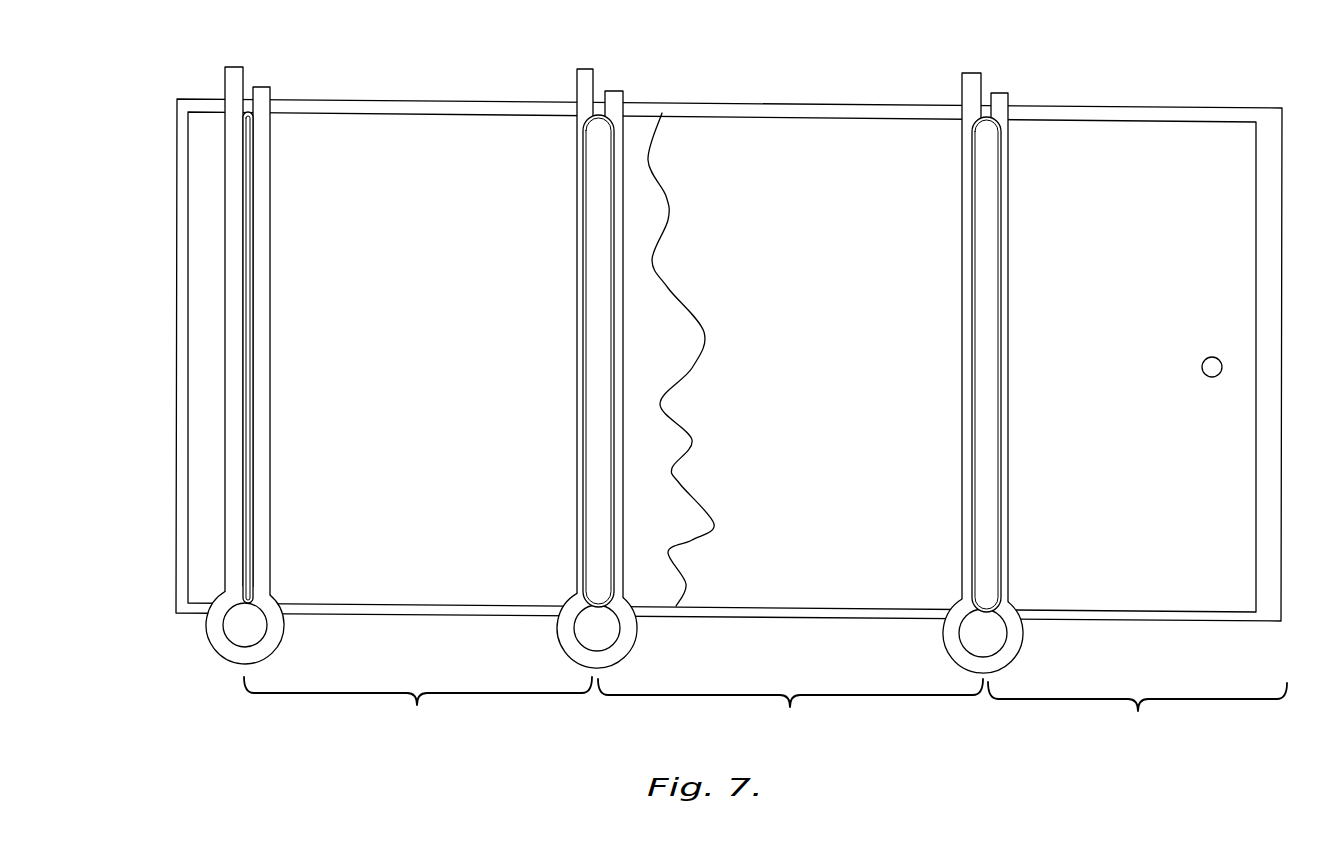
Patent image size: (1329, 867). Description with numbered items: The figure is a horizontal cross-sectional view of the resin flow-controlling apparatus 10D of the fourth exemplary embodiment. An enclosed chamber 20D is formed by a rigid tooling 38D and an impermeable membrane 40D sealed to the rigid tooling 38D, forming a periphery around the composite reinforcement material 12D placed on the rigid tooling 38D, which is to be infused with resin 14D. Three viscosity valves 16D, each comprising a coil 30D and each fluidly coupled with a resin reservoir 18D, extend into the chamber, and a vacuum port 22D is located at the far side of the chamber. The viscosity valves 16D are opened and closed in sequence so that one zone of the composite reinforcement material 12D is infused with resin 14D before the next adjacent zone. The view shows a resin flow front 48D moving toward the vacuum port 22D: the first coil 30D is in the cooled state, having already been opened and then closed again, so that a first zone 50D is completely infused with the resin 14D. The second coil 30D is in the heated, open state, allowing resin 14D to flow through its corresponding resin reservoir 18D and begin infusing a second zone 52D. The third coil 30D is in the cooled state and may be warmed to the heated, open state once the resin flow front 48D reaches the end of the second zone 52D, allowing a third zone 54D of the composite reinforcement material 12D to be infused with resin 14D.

The resin flow-controlling apparatus 10D is at (396, 68).
The composite reinforcement material 12D is at (713, 133).
The resin 14D is at (467, 133).
The viscosity valve 16D is at (272, 640).
The resin reservoir 18D is at (252, 408).
The enclosed chamber 20D is at (857, 128).
The vacuum port 22D is at (1212, 356).
The coil 30D is at (263, 220).
The rigid tooling 38D is at (1232, 108).
The impermeable membrane 40D is at (1104, 130).
The resin flow front 48D is at (668, 192).
The first zone 50D is at (418, 707).
The second zone 52D is at (790, 711).
The third zone 54D is at (1137, 714).